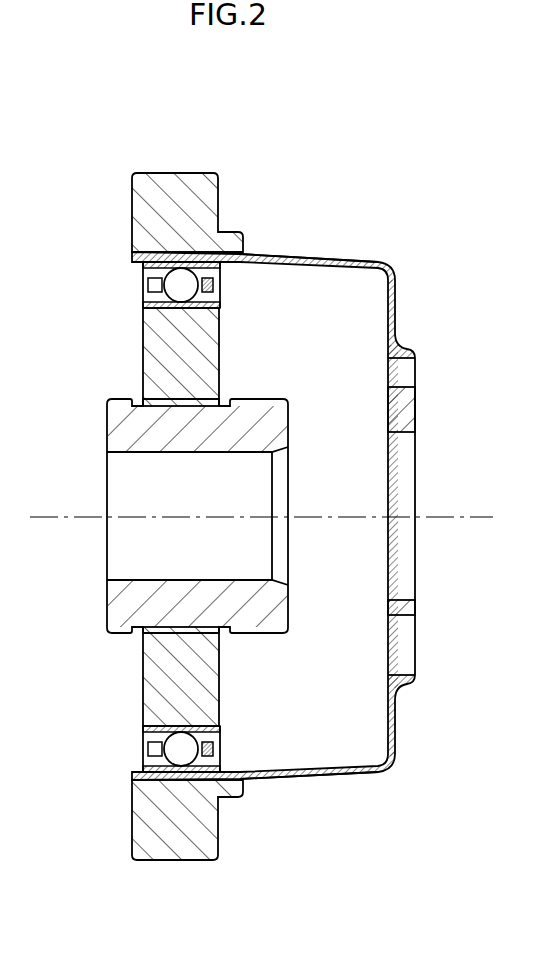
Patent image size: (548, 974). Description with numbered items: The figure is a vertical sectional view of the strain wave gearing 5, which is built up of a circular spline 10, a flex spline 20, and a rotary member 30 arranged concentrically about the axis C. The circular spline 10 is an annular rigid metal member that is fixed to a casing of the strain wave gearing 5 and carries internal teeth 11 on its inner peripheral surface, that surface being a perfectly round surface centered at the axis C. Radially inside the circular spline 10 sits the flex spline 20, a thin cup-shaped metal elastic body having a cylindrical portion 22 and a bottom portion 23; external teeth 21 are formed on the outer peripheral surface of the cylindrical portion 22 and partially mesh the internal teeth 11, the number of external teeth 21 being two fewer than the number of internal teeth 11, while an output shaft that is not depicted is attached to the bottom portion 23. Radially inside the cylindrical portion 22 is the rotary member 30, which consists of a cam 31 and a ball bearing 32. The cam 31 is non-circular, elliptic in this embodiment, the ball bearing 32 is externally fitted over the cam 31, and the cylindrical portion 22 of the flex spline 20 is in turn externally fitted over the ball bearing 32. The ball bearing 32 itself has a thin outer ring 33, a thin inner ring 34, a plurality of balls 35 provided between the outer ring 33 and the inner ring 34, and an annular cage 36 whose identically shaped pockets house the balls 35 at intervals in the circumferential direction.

The strain wave gearing 5 is at (254, 486).
The circular spline 10 is at (196, 183).
The internal teeth 11 is at (203, 770).
The flex spline 20 is at (262, 499).
The external teeth 21 is at (170, 781).
The cylindrical portion 22 is at (239, 265).
The bottom portion 23 is at (395, 318).
The rotary member 30 is at (118, 494).
The cam 31 is at (143, 358).
The ball bearing 32 is at (139, 285).
The outer ring 33 is at (168, 726).
The inner ring 34 is at (204, 723).
The balls 35 is at (191, 741).
The cage 36 is at (143, 739).
The axis C is at (453, 517).